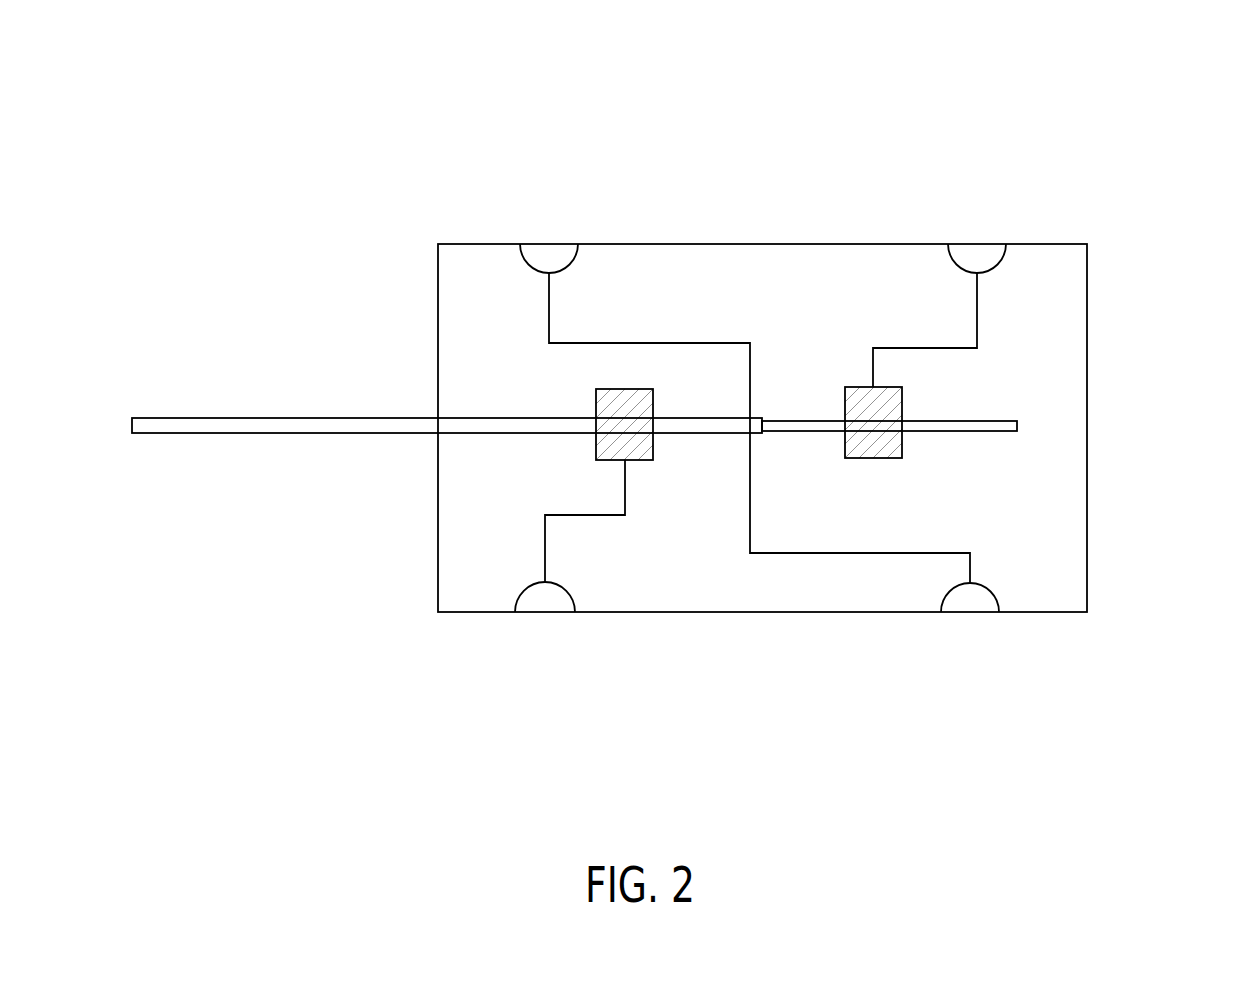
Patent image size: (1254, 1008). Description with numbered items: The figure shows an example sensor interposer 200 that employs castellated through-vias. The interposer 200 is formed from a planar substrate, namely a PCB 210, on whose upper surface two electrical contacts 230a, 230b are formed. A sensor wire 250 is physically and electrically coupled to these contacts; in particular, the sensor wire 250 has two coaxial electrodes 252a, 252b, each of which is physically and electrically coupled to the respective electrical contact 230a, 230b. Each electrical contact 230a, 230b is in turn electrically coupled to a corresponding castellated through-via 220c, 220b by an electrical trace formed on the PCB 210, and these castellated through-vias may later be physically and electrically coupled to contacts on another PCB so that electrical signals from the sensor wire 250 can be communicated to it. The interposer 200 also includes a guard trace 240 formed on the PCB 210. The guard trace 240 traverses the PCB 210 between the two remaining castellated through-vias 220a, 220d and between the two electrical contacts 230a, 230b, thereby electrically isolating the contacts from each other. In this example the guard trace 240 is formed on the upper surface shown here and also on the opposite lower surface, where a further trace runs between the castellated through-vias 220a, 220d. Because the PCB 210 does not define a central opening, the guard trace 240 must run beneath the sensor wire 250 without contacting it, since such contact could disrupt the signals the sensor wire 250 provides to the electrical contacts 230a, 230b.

The sensor interposer 200 is at (283, 141).
The PCB 210 is at (818, 244).
The castellated through-via 220a is at (545, 247).
The castellated through-via 220b is at (990, 247).
The castellated through-via 220c is at (545, 604).
The castellated through-via 220d is at (978, 604).
The electrical contact 230a is at (595, 403).
The electrical contact 230b is at (903, 450).
The guard trace 240 is at (668, 343).
The sensor wire 250 is at (203, 385).
The coaxial electrode 252a is at (283, 428).
The coaxial electrode 252b is at (1022, 421).